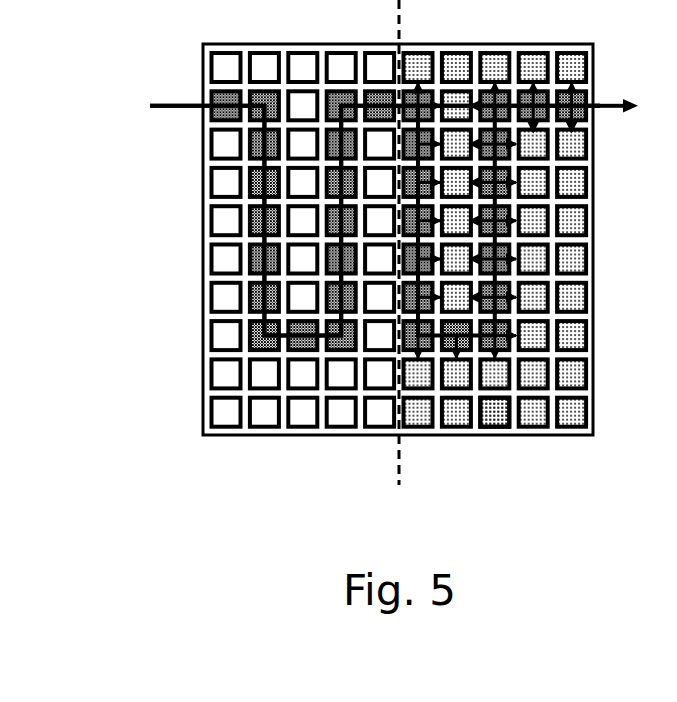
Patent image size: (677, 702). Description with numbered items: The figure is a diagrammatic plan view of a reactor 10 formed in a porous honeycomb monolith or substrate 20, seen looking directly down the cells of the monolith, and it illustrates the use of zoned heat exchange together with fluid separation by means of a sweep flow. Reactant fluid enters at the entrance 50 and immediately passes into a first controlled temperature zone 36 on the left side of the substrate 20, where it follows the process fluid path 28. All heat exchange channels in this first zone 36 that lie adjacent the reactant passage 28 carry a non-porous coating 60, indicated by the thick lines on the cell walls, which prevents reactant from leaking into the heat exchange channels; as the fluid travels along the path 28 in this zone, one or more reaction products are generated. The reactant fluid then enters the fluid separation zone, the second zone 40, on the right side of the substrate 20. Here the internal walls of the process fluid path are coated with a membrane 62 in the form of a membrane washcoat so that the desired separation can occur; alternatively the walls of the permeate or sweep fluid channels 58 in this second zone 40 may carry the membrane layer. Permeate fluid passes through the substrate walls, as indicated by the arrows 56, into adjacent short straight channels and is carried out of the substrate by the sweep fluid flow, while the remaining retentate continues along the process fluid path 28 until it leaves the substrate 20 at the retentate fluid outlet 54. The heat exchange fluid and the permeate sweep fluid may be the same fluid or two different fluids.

The reactor 10 is at (274, 526).
The porous substrate 20 is at (200, 64).
The process fluid path 28 is at (187, 112).
The entrance 50 is at (375, 221).
The retentate fluid outlet 54 is at (609, 97).
The arrows 56 is at (521, 175).
The non-porous coating 60 is at (240, 299).
The membrane 62 is at (515, 269).
The first controlled temperature zone 36 is at (300, 412).
The second zone 40 is at (498, 413).
The permeate or sweep fluid channels 58 is at (494, 412).